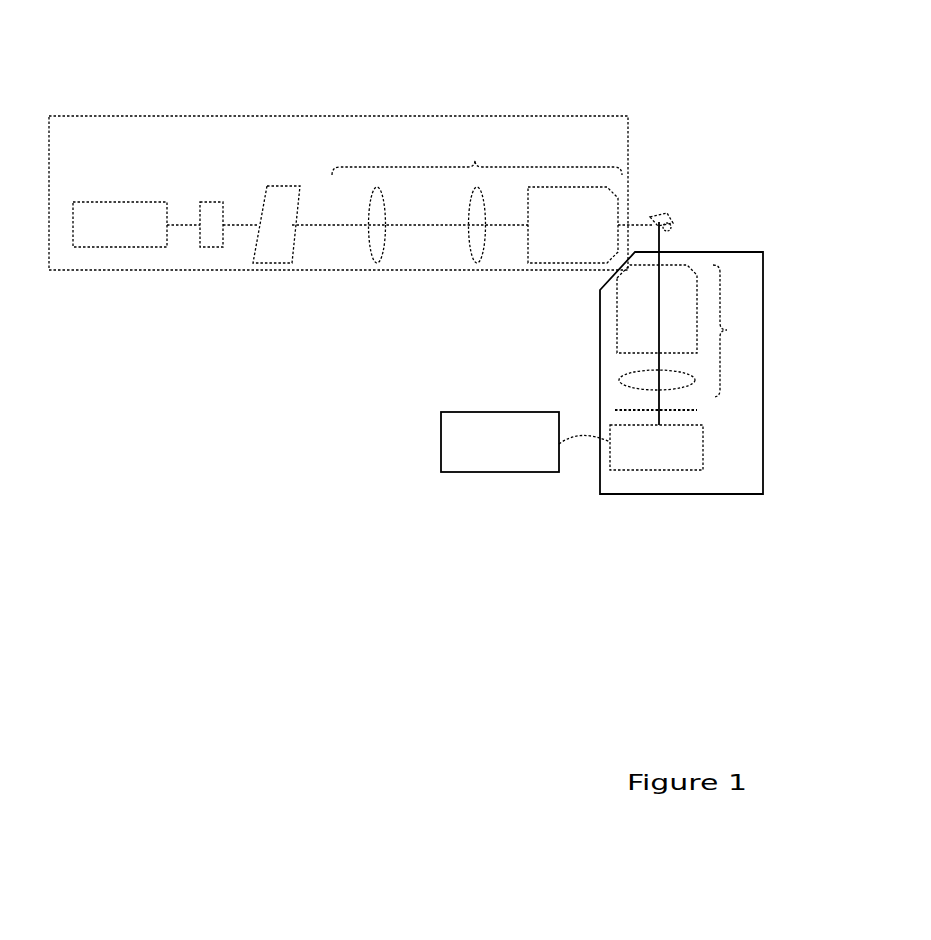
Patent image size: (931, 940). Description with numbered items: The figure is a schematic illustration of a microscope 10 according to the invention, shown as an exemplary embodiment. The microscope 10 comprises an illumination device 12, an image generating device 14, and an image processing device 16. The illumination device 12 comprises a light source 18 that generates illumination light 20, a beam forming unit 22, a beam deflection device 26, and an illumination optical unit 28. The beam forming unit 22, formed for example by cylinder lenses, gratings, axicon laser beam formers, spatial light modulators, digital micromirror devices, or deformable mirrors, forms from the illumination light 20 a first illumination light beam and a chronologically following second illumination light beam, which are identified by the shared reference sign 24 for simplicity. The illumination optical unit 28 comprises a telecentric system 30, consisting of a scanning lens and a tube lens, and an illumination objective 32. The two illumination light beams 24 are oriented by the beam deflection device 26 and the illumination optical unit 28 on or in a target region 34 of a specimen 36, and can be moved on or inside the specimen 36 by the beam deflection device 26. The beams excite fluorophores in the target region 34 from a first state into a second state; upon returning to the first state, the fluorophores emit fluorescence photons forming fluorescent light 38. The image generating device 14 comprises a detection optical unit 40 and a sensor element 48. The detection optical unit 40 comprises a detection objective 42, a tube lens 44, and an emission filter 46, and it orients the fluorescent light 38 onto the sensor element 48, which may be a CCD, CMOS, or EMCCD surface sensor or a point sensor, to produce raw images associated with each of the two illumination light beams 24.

The microscope 10 is at (668, 68).
The illumination device 12 is at (139, 116).
The image generating device 14 is at (763, 365).
The image processing device 16 is at (455, 412).
The light source 18 is at (108, 202).
The illumination light 20 is at (178, 222).
The beam forming unit 22 is at (213, 202).
The illumination light beams 24 is at (333, 225).
The beam deflection device 26 is at (288, 186).
The illumination optical unit 28 is at (477, 149).
The telecentric system 30 is at (472, 200).
The illumination objective 32 is at (547, 267).
The target region 34 is at (671, 215).
The specimen 36 is at (660, 214).
The fluorescent light 38 is at (661, 247).
The detection optical unit 40 is at (737, 331).
The detection objective 42 is at (617, 322).
The tube lens 44 is at (618, 382).
The emission filter 46 is at (697, 410).
The sensor element 48 is at (703, 450).